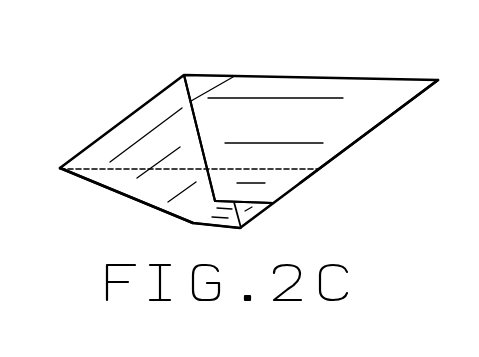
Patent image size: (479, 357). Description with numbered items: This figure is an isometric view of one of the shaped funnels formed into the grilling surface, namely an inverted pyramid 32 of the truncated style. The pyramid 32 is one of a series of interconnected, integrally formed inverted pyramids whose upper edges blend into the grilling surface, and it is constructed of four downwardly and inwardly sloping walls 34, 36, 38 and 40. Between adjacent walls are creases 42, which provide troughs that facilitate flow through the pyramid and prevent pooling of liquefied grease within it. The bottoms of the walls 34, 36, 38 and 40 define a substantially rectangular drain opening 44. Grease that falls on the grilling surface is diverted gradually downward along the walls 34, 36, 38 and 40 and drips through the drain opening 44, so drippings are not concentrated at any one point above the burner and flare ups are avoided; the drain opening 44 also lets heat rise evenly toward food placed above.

The inverted pyramid 32 is at (268, 58).
The sloping wall 34 is at (341, 114).
The sloping wall 36 is at (397, 117).
The sloping wall 38 is at (161, 179).
The sloping wall 40 is at (151, 140).
The crease 42 is at (233, 77).
The drain opening 44 is at (243, 229).